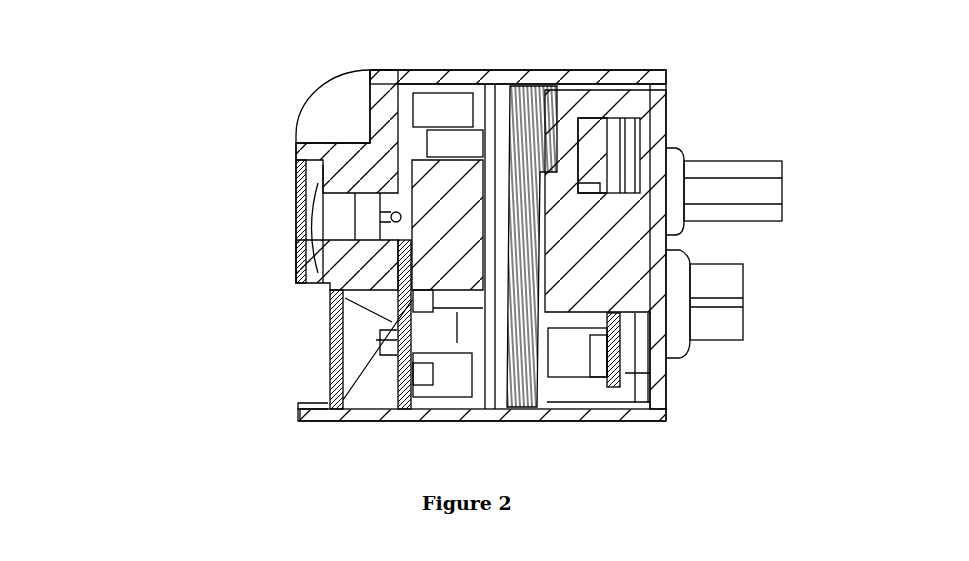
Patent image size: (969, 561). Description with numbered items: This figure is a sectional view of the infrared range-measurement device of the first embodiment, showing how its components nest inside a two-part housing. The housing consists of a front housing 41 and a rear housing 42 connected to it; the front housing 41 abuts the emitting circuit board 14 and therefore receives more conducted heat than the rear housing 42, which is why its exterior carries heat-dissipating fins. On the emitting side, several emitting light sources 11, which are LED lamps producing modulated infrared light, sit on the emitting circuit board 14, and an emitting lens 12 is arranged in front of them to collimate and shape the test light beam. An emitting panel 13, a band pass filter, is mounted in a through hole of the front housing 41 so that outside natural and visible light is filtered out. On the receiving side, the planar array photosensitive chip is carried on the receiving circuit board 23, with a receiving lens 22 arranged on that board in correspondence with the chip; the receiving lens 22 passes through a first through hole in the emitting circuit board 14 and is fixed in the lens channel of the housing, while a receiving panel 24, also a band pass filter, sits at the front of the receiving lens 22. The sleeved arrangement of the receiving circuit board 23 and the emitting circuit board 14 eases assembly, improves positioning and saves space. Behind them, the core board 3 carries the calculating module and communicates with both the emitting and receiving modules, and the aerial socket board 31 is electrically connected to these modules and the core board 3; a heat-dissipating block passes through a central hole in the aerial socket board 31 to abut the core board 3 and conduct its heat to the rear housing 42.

The front housing 41 is at (332, 83).
The rear housing 42 is at (663, 70).
The receiving panel 24 is at (297, 203).
The receiving lens 22 is at (300, 233).
The emitting light source 11 is at (393, 350).
The emitting panel 13 is at (332, 357).
The emitting lens 12 is at (335, 397).
The emitting circuit board 14 is at (405, 404).
The receiving circuit board 23 is at (487, 405).
The core board 3 is at (525, 407).
The aerial socket board 31 is at (622, 382).